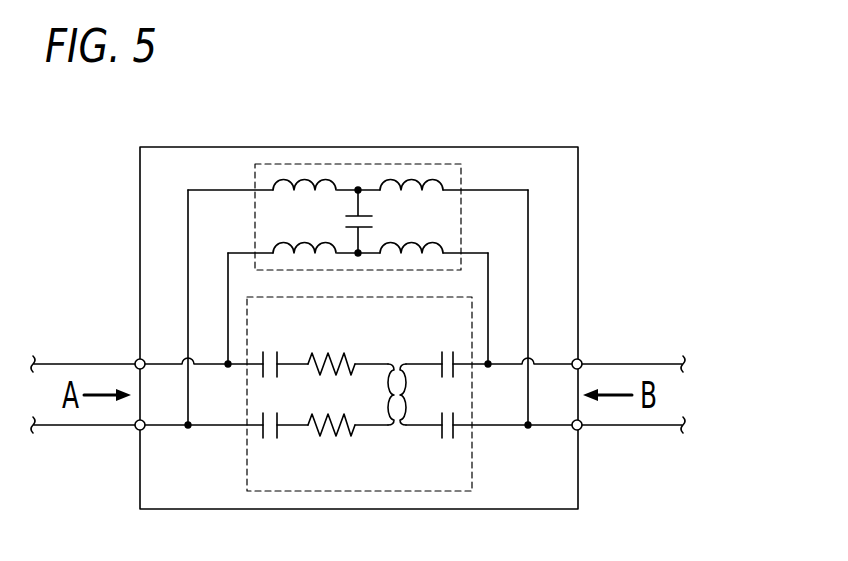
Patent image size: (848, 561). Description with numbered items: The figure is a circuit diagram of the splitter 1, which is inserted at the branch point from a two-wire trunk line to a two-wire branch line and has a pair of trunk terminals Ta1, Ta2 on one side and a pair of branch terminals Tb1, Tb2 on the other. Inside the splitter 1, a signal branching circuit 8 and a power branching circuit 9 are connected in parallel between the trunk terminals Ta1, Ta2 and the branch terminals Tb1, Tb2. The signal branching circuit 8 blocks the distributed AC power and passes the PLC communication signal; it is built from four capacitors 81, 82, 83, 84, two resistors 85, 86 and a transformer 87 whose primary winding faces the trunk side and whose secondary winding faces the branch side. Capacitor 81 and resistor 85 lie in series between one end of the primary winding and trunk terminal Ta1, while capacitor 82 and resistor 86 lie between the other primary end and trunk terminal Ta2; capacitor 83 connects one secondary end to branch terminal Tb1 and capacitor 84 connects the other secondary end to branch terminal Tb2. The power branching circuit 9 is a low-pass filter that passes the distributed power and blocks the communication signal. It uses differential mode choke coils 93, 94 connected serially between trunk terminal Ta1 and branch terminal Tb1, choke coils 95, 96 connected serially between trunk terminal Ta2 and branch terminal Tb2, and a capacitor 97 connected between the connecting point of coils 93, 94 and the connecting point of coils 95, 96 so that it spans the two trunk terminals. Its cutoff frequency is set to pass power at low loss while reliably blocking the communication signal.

The splitter 1 is at (579, 170).
The signal branching circuit 8 is at (473, 460).
The power branching circuit 9 is at (353, 162).
The capacitor 81 is at (275, 340).
The capacitor 82 is at (270, 439).
The capacitor 83 is at (441, 351).
The capacitor 84 is at (443, 439).
The resistor 85 is at (330, 337).
The resistor 86 is at (349, 434).
The transformer 87 is at (398, 378).
The choke coil 93 is at (297, 247).
The choke coil 94 is at (445, 243).
The choke coil 95 is at (295, 186).
The choke coil 96 is at (423, 186).
The capacitor 97 is at (371, 224).
The trunk terminal Ta1 is at (136, 360).
The trunk terminal Ta2 is at (136, 430).
The branch terminal Tb1 is at (582, 359).
The branch terminal Tb2 is at (582, 430).